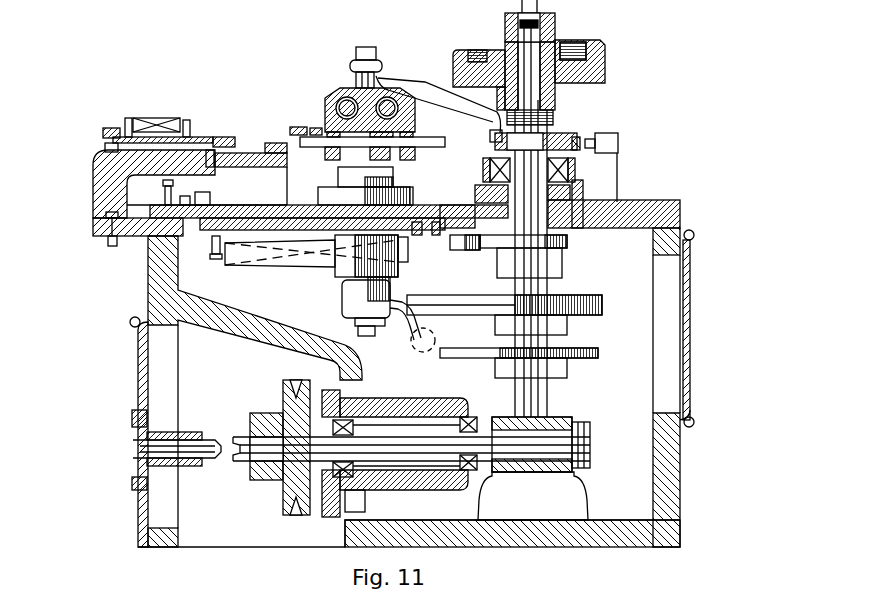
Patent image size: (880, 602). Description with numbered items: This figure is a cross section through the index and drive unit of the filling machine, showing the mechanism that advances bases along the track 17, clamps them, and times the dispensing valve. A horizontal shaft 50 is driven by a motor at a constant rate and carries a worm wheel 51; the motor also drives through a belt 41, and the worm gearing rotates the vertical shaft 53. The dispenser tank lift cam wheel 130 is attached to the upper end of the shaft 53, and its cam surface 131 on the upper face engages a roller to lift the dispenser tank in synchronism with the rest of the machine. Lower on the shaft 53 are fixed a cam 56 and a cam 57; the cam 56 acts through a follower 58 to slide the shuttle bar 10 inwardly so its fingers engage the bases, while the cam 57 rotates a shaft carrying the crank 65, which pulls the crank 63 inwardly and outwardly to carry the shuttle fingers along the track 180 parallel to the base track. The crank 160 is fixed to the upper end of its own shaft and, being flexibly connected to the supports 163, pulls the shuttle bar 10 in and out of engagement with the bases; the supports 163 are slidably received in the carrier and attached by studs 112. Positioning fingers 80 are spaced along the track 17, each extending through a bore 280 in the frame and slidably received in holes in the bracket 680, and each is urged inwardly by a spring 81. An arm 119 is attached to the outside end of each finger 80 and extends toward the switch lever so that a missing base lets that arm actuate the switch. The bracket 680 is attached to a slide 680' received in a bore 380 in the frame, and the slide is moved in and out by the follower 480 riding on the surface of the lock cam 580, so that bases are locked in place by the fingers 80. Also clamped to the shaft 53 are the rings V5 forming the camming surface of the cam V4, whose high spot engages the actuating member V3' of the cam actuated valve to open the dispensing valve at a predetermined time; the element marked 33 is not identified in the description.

The arm 119 is at (111, 141).
The spring 81 is at (160, 118).
The bore 280 is at (180, 125).
The track 17 is at (250, 152).
The positioning finger 80 is at (209, 150).
The shuttle bar 10 is at (293, 146).
The support 163 is at (436, 147).
The stud 112 is at (312, 128).
The track 180 is at (396, 110).
The crank 160 is at (394, 177).
The crank 63 is at (352, 60).
The crank 65 is at (428, 80).
The cam surface 131 is at (464, 50).
The dispenser tank lift cam wheel 130 is at (487, 70).
The shaft 53 is at (548, 398).
The cam V4 is at (578, 150).
The rings V5 is at (578, 140).
The actuating member V3' is at (632, 144).
The conduit 33 is at (620, 140).
The follower 480 is at (456, 250).
The lock cam 580 is at (570, 246).
The cam 57 is at (598, 296).
The cam 56 is at (596, 355).
The bore 380 is at (216, 246).
The follower 58 is at (408, 326).
The belt 41 is at (292, 384).
The shaft 50 is at (240, 458).
The worm wheel 51 is at (568, 418).
The bracket 680 is at (190, 184).
The slide 680' is at (138, 244).